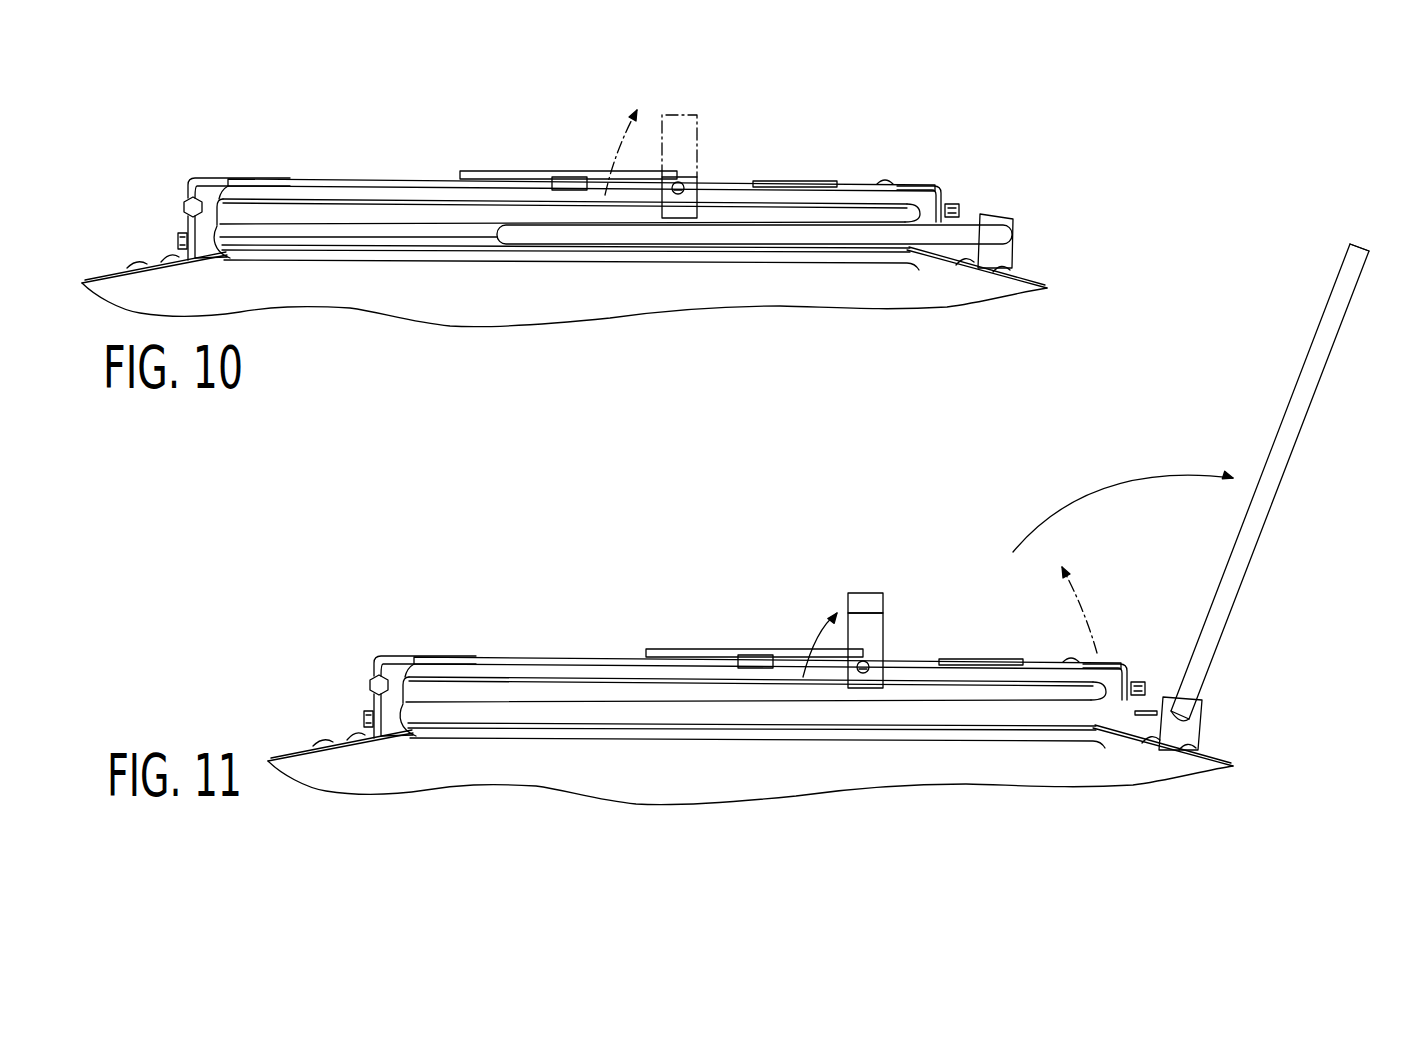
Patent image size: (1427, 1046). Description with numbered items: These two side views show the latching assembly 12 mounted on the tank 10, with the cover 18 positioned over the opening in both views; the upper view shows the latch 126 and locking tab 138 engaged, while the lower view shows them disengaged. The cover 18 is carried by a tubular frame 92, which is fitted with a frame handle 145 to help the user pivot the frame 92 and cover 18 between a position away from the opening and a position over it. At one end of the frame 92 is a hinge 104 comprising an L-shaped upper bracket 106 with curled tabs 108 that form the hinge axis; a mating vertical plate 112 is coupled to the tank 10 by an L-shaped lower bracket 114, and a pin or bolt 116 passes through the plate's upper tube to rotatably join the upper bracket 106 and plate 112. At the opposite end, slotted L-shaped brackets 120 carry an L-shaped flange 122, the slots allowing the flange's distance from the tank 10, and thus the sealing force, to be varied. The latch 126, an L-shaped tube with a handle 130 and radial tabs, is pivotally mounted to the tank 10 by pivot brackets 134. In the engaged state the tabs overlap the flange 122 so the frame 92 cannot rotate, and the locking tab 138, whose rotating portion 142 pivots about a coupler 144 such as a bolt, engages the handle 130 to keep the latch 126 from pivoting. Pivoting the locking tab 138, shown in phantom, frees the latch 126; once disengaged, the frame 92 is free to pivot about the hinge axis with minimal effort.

In FIG. 10, the tank 10 is at (608, 321).
In FIG. 11, the tank 10 is at (660, 805).
In FIG. 10, the latching assembly 12 is at (327, 173).
In FIG. 11, the latching assembly 12 is at (505, 652).
In FIG. 10, the cover 18 is at (230, 198).
In FIG. 11, the cover 18 is at (427, 677).
In FIG. 10, the tubular frame 92 is at (399, 176).
In FIG. 11, the tubular frame 92 is at (575, 655).
In FIG. 10, the hinge 104 is at (213, 173).
In FIG. 11, the hinge 104 is at (390, 652).
In FIG. 10, the upper bracket 106 is at (237, 180).
In FIG. 11, the upper bracket 106 is at (427, 655).
In FIG. 10, the curled tabs 108 is at (187, 187).
In FIG. 11, the curled tabs 108 is at (377, 663).
In FIG. 10, the vertical plate 112 is at (202, 222).
In FIG. 11, the vertical plate 112 is at (387, 703).
In FIG. 10, the lower bracket 114 is at (158, 255).
In FIG. 11, the lower bracket 114 is at (338, 740).
In FIG. 10, the pin or bolt 116 is at (183, 208).
In FIG. 11, the pin or bolt 116 is at (370, 683).
In FIG. 10, the L-shaped brackets 120 is at (942, 205).
In FIG. 11, the L-shaped brackets 120 is at (1128, 663).
In FIG. 10, the L-shaped flange 122 is at (947, 203).
In FIG. 11, the L-shaped flange 122 is at (1158, 693).
In FIG. 10, the latch 126 is at (883, 250).
In FIG. 11, the latch 126 is at (1367, 282).
In FIG. 10, the handle 130 is at (835, 250).
In FIG. 11, the handle 130 is at (1340, 343).
In FIG. 10, the pivot brackets 134 is at (1013, 242).
In FIG. 11, the pivot brackets 134 is at (1203, 722).
In FIG. 10, the locking tab 138 is at (700, 190).
In FIG. 11, the locking tab 138 is at (887, 628).
In FIG. 11, the rotating portion 142 is at (862, 592).
In FIG. 10, the coupler 144 is at (678, 195).
In FIG. 11, the coupler 144 is at (868, 666).
In FIG. 10, the frame handle 145 is at (792, 178).
In FIG. 11, the frame handle 145 is at (1047, 660).